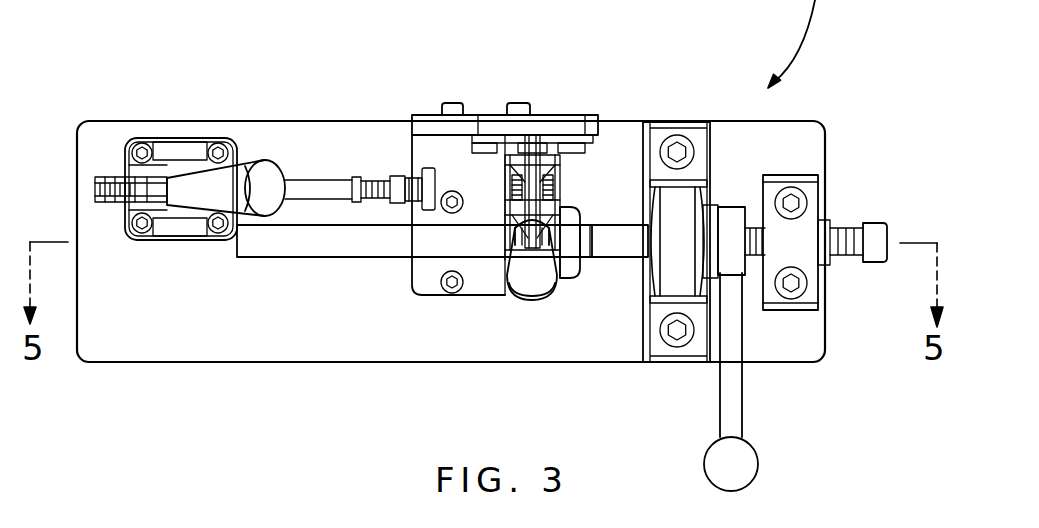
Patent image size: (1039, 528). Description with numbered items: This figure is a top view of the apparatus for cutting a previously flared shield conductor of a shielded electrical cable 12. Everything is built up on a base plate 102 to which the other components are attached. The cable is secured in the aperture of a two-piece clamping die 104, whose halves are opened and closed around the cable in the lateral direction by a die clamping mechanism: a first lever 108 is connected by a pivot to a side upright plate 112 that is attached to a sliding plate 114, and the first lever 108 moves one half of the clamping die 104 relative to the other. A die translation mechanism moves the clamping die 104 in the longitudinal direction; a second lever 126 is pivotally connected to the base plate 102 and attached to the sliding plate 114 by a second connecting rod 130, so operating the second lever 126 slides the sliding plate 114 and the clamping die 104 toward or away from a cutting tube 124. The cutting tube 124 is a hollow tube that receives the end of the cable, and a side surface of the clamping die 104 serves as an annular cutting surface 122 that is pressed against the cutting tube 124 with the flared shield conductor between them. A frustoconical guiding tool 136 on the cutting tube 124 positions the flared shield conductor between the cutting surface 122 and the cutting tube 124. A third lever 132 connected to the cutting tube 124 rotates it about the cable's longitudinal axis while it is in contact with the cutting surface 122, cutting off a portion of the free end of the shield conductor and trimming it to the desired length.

The base plate 102 is at (202, 362).
The shielded electrical cable 12 is at (350, 247).
The side upright plate 112 is at (486, 122).
The sliding plate 114 is at (472, 288).
The cutting surface 122 is at (582, 223).
The cutting tube 124 is at (620, 233).
The second lever 126 is at (267, 172).
The second connecting rod 130 is at (332, 183).
The third lever 132 is at (745, 465).
The frustoconical guiding tool 136 is at (585, 263).
The clamping die 104 is at (563, 277).
The first lever 108 is at (527, 290).